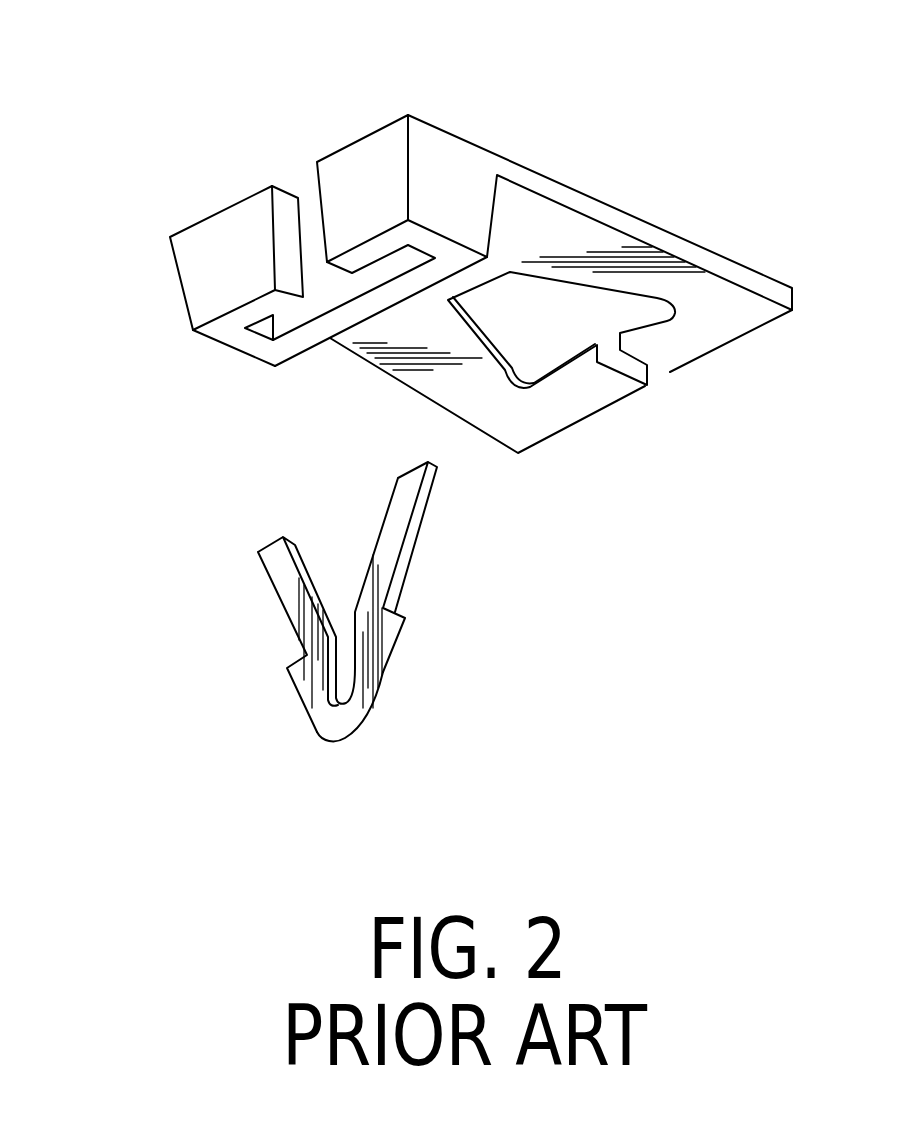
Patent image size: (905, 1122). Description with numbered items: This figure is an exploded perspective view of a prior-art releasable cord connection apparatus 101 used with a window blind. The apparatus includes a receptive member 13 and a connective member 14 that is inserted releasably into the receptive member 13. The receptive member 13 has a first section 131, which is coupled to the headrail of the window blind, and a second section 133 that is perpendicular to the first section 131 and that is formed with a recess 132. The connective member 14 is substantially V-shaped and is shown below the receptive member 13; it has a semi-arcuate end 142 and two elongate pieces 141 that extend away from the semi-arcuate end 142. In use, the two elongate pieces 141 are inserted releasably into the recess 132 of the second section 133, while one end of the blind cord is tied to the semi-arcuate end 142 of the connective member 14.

The releasable cord connection apparatus 101 is at (699, 109).
The receptive member 13 is at (532, 158).
The first section 131 is at (678, 249).
The recess 132 is at (323, 302).
The second section 133 is at (187, 271).
The connective member 14 is at (348, 610).
The elongate pieces 141 is at (423, 522).
The semi-arcuate end 142 is at (325, 740).